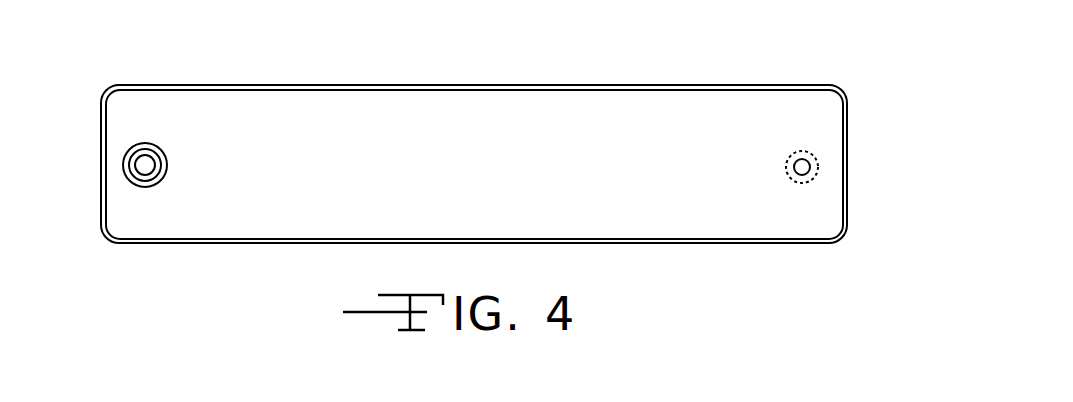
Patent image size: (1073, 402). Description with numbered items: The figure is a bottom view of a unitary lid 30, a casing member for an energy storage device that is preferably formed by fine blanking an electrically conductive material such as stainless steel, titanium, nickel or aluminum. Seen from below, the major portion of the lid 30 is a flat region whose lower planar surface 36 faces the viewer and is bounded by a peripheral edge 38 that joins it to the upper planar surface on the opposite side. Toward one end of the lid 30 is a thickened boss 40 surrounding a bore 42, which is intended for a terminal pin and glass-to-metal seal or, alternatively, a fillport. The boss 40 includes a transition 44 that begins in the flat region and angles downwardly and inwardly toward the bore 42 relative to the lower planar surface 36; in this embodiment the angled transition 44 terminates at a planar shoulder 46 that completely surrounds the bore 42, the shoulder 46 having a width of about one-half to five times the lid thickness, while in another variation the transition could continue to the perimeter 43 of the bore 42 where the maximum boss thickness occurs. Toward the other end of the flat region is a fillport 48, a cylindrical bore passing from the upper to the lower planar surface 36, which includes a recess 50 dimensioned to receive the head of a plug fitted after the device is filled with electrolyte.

The unitary lid 30 is at (877, 129).
The lower planar surface 36 is at (488, 128).
The peripheral edge 38 is at (716, 85).
The thickened boss 40 is at (175, 159).
The bore 42 is at (145, 157).
The perimeter of the bore 43 is at (154, 165).
The transition 44 is at (162, 174).
The planar shoulder 46 is at (145, 170).
The fillport 48 is at (797, 169).
The recess 50 is at (788, 154).